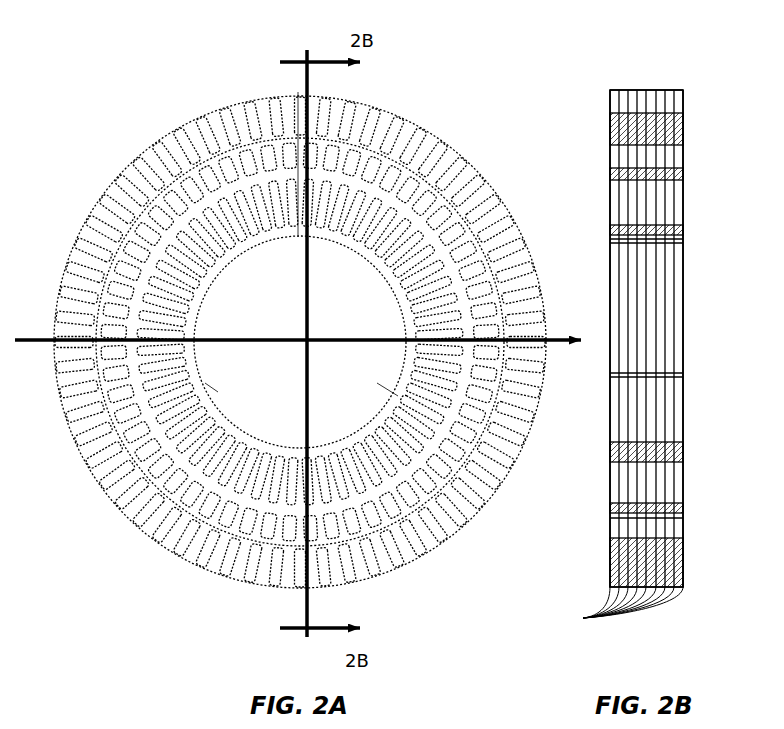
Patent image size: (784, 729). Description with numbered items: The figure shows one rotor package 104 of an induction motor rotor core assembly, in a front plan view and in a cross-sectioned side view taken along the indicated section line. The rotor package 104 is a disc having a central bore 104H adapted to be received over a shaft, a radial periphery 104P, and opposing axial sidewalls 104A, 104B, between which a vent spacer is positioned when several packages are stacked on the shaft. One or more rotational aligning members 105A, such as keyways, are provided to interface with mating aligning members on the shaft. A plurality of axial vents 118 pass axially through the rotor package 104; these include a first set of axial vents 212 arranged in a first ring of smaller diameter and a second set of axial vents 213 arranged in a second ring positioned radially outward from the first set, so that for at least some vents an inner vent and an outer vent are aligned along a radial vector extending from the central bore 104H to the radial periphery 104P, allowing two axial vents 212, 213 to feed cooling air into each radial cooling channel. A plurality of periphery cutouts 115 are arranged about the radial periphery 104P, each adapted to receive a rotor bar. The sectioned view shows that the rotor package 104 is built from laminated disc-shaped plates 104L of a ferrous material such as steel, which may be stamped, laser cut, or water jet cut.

In FIG. 2A, the rotor package 104 is at (440, 126).
In FIG. 2B, the rotor package 104 is at (683, 90).
In FIG. 2A, the radial periphery 104P is at (234, 100).
In FIG. 2B, the radial periphery 104P is at (647, 90).
In FIG. 2A, the central bore 104H is at (251, 287).
In FIG. 2B, the central bore 104H is at (608, 270).
In FIG. 2B, the axial sidewall 104A is at (610, 131).
In FIG. 2B, the axial sidewall 104B is at (683, 131).
In FIG. 2B, the laminated disc-shaped plates 104L is at (610, 360).
In FIG. 2A, the rotational aligning member 105A is at (300, 238).
In FIG. 2B, the rotational aligning member 105A is at (657, 242).
In FIG. 2A, the periphery cutouts 115 is at (528, 262).
In FIG. 2A, the axial vents 118 is at (211, 470).
In FIG. 2B, the axial vents 118 is at (683, 160).
In FIG. 2A, the first set of axial vents 212 is at (333, 485).
In FIG. 2A, the second set of axial vents 213 is at (122, 302).